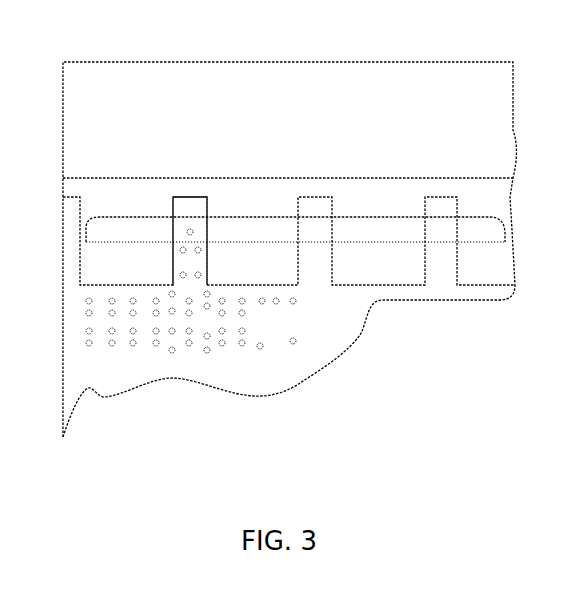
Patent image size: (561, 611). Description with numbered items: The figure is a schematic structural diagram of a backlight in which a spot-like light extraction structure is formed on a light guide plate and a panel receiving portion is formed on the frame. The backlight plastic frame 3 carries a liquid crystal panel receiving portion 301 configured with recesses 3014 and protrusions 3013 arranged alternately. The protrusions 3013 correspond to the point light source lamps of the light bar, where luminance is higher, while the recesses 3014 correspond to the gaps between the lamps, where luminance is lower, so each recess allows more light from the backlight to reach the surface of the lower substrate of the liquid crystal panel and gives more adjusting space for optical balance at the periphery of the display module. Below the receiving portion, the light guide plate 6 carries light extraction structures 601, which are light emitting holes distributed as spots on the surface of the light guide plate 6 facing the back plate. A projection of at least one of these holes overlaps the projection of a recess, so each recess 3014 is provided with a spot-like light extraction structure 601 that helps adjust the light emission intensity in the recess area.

The backlight plastic frame 3 is at (222, 130).
The liquid crystal panel receiving portion 301 is at (283, 217).
The protrusions 3013 is at (258, 234).
The recesses 3014 is at (197, 207).
The light guide plate 6 is at (180, 319).
The light extraction structures 601 is at (237, 330).